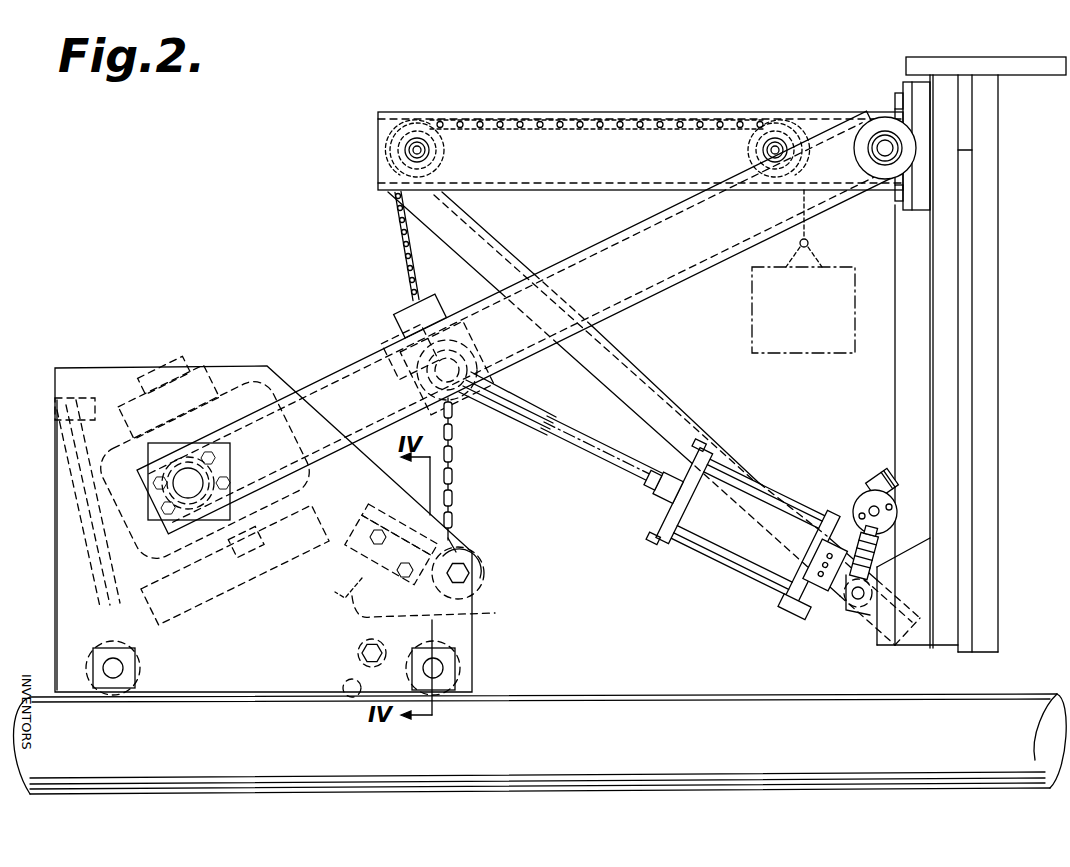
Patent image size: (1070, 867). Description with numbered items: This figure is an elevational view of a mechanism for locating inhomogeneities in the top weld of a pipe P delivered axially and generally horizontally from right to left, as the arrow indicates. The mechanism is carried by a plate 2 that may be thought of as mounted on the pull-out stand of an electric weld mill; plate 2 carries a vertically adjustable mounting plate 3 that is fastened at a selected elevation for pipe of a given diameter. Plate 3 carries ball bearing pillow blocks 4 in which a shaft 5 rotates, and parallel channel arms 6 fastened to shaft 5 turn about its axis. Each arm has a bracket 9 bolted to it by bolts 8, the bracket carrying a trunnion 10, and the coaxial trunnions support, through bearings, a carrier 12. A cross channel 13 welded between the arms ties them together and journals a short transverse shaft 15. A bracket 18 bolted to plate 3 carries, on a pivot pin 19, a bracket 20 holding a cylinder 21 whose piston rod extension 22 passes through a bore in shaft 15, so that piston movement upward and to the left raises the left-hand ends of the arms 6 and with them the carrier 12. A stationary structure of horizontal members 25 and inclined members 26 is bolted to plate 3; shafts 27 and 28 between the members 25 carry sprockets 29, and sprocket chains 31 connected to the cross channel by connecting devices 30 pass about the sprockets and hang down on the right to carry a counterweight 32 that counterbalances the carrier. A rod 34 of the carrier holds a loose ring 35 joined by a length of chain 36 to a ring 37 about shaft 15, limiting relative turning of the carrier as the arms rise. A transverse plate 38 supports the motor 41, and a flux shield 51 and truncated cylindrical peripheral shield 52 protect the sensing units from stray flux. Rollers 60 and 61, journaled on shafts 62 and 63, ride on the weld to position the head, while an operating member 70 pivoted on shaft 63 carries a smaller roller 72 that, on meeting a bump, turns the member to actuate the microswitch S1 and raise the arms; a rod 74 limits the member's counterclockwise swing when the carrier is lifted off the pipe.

The plate 2 is at (999, 325).
The second plate 3 is at (928, 399).
The ball bearing pillow blocks 4 is at (868, 188).
The shaft 5 is at (885, 146).
The arms 6 is at (650, 290).
The bolts 8 is at (215, 455).
The bracket 9 is at (232, 487).
The trunnion 10 is at (186, 485).
The carrier 12 is at (97, 368).
The cross channel 13 is at (392, 360).
The short transverse shaft 15 is at (477, 352).
The bracket 18 is at (892, 622).
The pivot pin 19 is at (853, 598).
The bracket 20 is at (800, 603).
The cylinder 21 is at (728, 548).
The extension 22 is at (578, 446).
The generally horizontal members 25 is at (578, 112).
The inclined members 26 is at (645, 366).
The shaft 27 is at (419, 146).
The shaft 28 is at (775, 146).
The sprockets 29 is at (446, 152).
The connecting devices 30 is at (432, 306).
The sprocket chains 31 is at (406, 252).
The counterweight 32 is at (768, 352).
The rod 34 is at (462, 573).
The ring 35 is at (480, 560).
The length of chain 36 is at (454, 474).
The ring 37 is at (452, 412).
The plate 38 is at (76, 492).
The motor 41 is at (255, 388).
The flux shield 51 is at (272, 560).
The peripheral shield 52 is at (320, 626).
The roller 60 is at (88, 672).
The roller 61 is at (458, 680).
The shaft 62 is at (112, 668).
The shaft 63 is at (445, 668).
The operating member 70 is at (440, 611).
The roller 72 is at (350, 692).
The rod 74 is at (358, 653).
The microswitch S1 is at (368, 566).
The pipe P is at (590, 720).